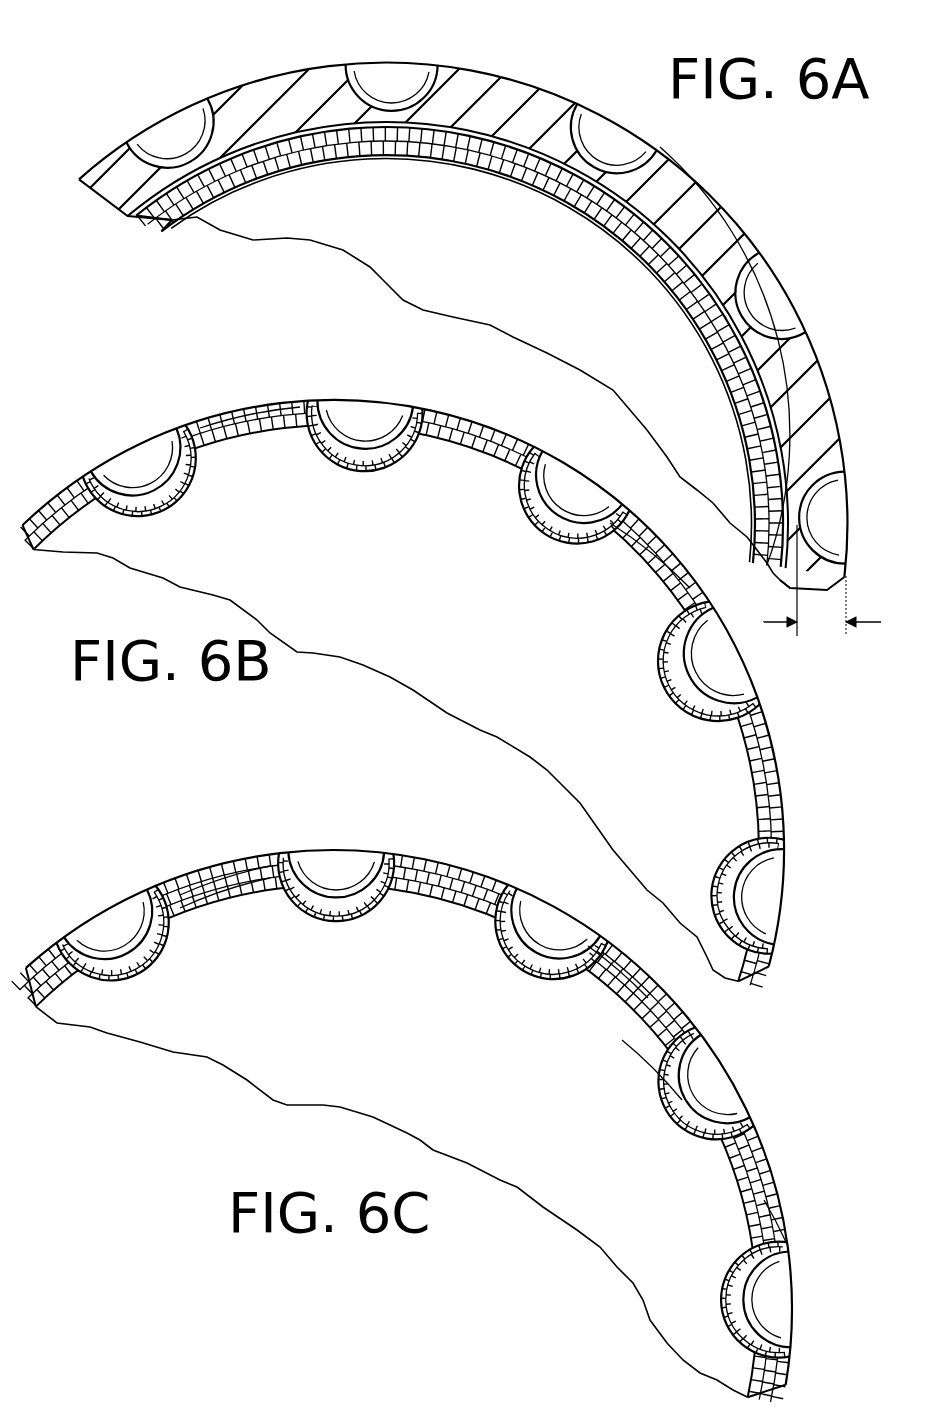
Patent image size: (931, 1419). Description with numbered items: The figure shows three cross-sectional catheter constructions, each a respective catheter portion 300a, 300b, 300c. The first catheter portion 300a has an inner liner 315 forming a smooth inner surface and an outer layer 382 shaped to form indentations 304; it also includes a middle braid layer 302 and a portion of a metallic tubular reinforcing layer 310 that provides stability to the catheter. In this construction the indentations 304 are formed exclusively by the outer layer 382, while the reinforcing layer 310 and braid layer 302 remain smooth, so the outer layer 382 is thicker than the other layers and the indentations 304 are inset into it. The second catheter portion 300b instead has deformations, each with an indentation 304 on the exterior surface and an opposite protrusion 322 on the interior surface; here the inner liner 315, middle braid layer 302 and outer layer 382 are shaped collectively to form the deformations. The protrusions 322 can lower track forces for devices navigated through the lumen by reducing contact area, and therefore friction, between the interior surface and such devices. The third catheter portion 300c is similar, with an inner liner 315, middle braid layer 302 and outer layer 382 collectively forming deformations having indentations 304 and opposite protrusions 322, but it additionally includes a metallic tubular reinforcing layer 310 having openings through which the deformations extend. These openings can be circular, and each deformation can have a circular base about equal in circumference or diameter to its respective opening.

In FIG. 6A, the catheter portion 300a is at (485, 330).
In FIG. 6B, the catheter portion 300b is at (455, 667).
In FIG. 6C, the catheter portion 300c is at (458, 1092).
In FIG. 6A, the outer layer 382 is at (485, 304).
In FIG. 6B, the outer layer 382 is at (455, 667).
In FIG. 6C, the outer layer 382 is at (447, 1092).
In FIG. 6A, the indentations 304 is at (643, 147).
In FIG. 6B, the indentations 304 is at (722, 845).
In FIG. 6C, the indentations 304 is at (497, 937).
In FIG. 6A, the inner liner 315 is at (298, 146).
In FIG. 6B, the inner liner 315 is at (262, 422).
In FIG. 6C, the inner liner 315 is at (232, 895).
In FIG. 6A, the metallic tubular reinforcing layer 310 is at (640, 183).
In FIG. 6C, the metallic tubular reinforcing layer 310 is at (250, 875).
In FIG. 6A, the middle braid layer 302 is at (735, 350).
In FIG. 6B, the middle braid layer 302 is at (648, 562).
In FIG. 6C, the middle braid layer 302 is at (666, 1098).
In FIG. 6B, the protrusion 322 is at (485, 650).
In FIG. 6C, the protrusion 322 is at (466, 1081).